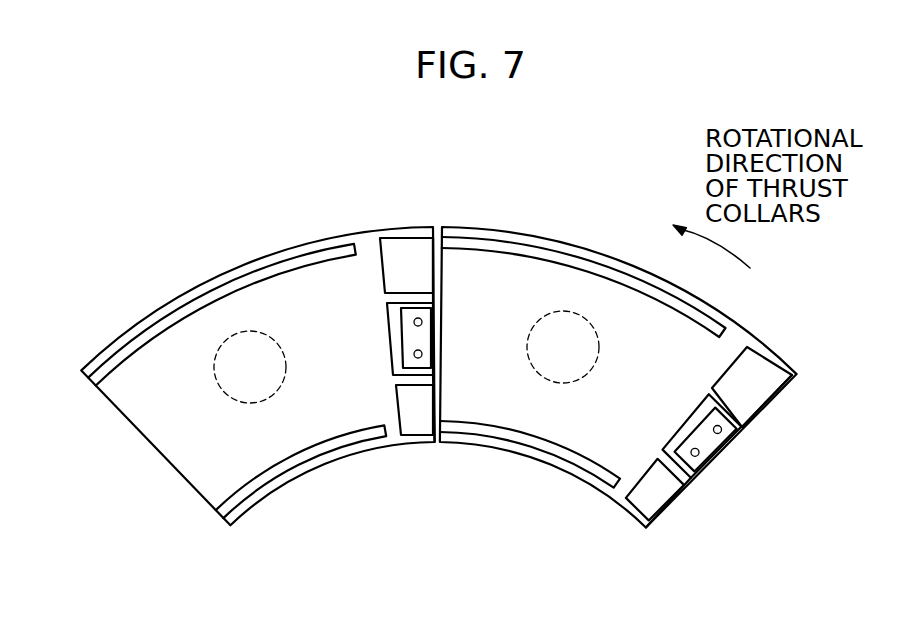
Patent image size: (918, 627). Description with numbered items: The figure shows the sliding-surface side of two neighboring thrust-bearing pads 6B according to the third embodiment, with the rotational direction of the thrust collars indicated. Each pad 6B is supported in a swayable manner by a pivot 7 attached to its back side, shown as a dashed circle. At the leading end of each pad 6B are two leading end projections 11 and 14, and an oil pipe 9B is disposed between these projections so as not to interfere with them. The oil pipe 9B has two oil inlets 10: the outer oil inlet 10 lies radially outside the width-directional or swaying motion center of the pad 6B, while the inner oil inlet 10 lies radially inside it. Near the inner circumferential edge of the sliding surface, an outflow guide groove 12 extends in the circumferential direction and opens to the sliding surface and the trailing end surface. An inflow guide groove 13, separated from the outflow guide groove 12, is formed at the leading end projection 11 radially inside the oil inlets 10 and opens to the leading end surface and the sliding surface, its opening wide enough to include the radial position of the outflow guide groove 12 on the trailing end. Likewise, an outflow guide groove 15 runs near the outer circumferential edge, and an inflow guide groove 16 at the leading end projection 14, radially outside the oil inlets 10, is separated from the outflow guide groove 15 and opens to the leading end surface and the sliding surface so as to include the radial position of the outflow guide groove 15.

The pad 6B is at (184, 292).
The pivot 7 is at (262, 331).
The oil pipe 9B is at (400, 338).
The oil inlet 10 is at (422, 354).
The leading end projection 11 is at (435, 403).
The outflow guide groove 12 is at (267, 476).
The inflow guide groove 13 is at (420, 430).
The leading end projection 14 is at (433, 263).
The outflow guide groove 15 is at (324, 253).
The inflow guide groove 16 is at (405, 243).